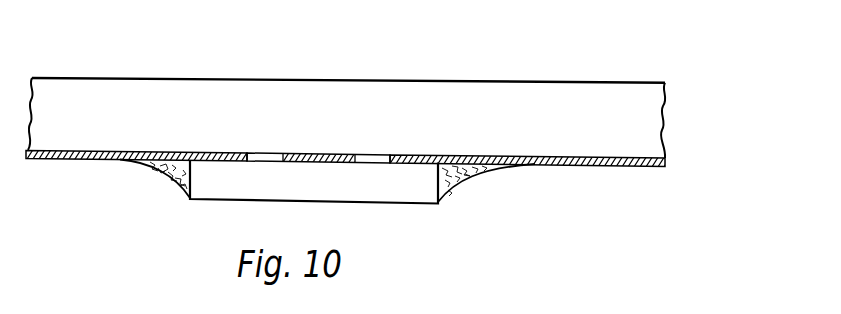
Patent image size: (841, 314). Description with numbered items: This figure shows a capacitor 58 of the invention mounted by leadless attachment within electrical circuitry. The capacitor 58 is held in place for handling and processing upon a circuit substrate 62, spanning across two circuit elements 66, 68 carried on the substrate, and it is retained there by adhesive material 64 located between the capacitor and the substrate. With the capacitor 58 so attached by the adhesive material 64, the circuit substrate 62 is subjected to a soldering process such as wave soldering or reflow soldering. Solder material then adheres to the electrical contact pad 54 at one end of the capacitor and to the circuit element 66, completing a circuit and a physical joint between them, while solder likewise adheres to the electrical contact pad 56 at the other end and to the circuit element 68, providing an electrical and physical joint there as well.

The circuit substrate 62 is at (296, 104).
The adhesive material 64 is at (333, 153).
The circuit element 66 is at (61, 157).
The circuit element 68 is at (563, 168).
The electrical contact pad 54 is at (177, 183).
The electrical contact pad 56 is at (462, 182).
The capacitor 58 is at (403, 205).